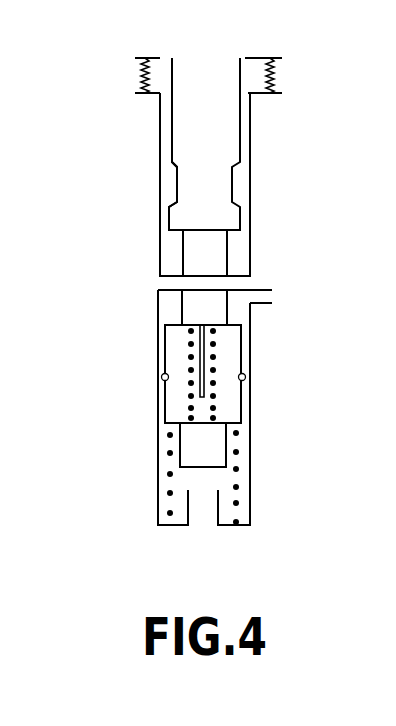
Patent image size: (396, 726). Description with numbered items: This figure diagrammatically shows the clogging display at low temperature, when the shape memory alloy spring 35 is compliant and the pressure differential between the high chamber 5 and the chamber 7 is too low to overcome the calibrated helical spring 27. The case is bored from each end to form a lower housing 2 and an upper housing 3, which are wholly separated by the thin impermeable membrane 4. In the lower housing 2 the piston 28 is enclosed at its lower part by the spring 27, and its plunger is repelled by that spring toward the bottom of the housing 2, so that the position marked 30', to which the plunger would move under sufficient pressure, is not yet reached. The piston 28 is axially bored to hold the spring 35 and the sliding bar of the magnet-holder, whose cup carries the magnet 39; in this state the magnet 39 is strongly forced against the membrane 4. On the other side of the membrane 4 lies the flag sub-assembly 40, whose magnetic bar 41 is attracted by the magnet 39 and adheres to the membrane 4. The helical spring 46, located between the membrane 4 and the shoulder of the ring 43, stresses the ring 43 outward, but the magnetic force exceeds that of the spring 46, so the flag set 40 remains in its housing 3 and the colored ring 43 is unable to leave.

The lower housing 2 is at (256, 364).
The upper housing 3 is at (260, 167).
The impermeable membrane 4 is at (170, 283).
The high chamber 5 is at (168, 306).
The chamber 7 is at (185, 482).
The calibrated helical spring 27 is at (170, 493).
The piston 28 is at (187, 405).
The displaced plunger position 30' is at (269, 374).
The shape memory alloy spring 35 is at (192, 340).
The magnet 39 is at (220, 303).
The flag sub-assembly 40 is at (188, 164).
The magnetic bar 41 is at (185, 254).
The ring 43 is at (265, 58).
The helical spring 46 is at (140, 61).